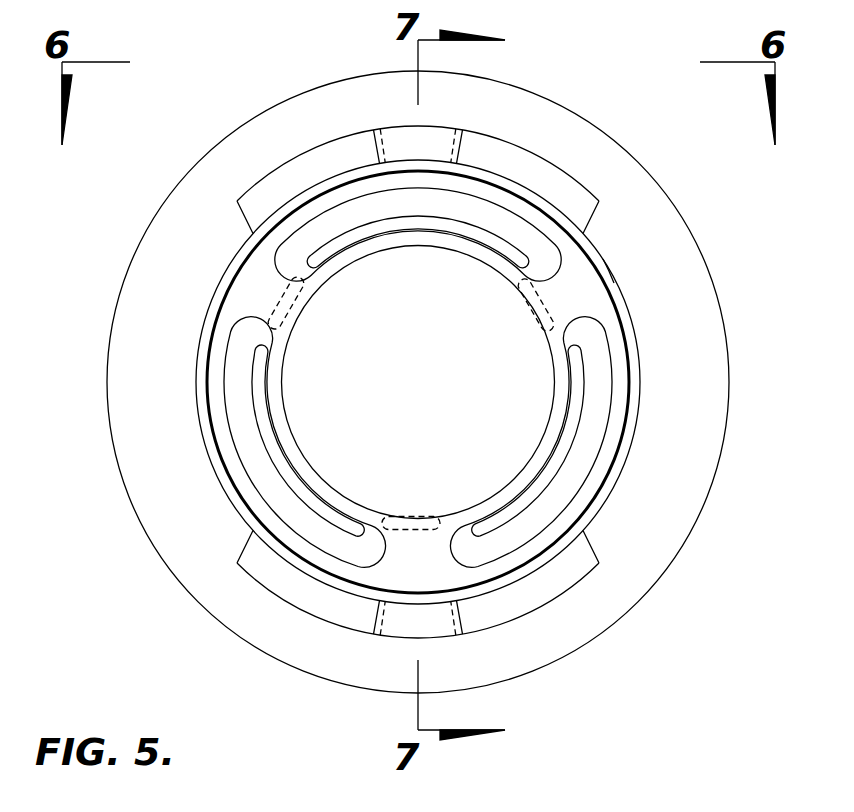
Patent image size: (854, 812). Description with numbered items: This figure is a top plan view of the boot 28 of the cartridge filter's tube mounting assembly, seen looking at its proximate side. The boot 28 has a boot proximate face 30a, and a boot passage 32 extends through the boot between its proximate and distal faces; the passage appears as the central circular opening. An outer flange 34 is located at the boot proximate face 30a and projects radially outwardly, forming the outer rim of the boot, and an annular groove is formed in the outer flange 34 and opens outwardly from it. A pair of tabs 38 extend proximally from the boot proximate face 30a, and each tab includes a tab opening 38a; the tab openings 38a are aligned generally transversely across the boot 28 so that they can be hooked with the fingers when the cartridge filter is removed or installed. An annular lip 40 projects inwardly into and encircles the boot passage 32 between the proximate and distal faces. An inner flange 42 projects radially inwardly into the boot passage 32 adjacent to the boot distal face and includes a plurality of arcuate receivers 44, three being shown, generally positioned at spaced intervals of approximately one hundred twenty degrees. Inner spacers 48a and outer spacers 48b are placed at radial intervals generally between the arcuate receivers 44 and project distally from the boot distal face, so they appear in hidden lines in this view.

The boot 28 is at (283, 70).
The boot proximate face 30a is at (172, 378).
The boot passage 32 is at (283, 370).
The outer flange 34 is at (706, 401).
The tabs 38 is at (396, 128).
The tab opening 38a is at (456, 634).
The annular lip 40 is at (619, 452).
The inner flange 42 is at (470, 258).
The arcuate receivers 44 is at (352, 537).
The inner spacer 48a is at (538, 318).
The outer spacer 48b is at (607, 258).